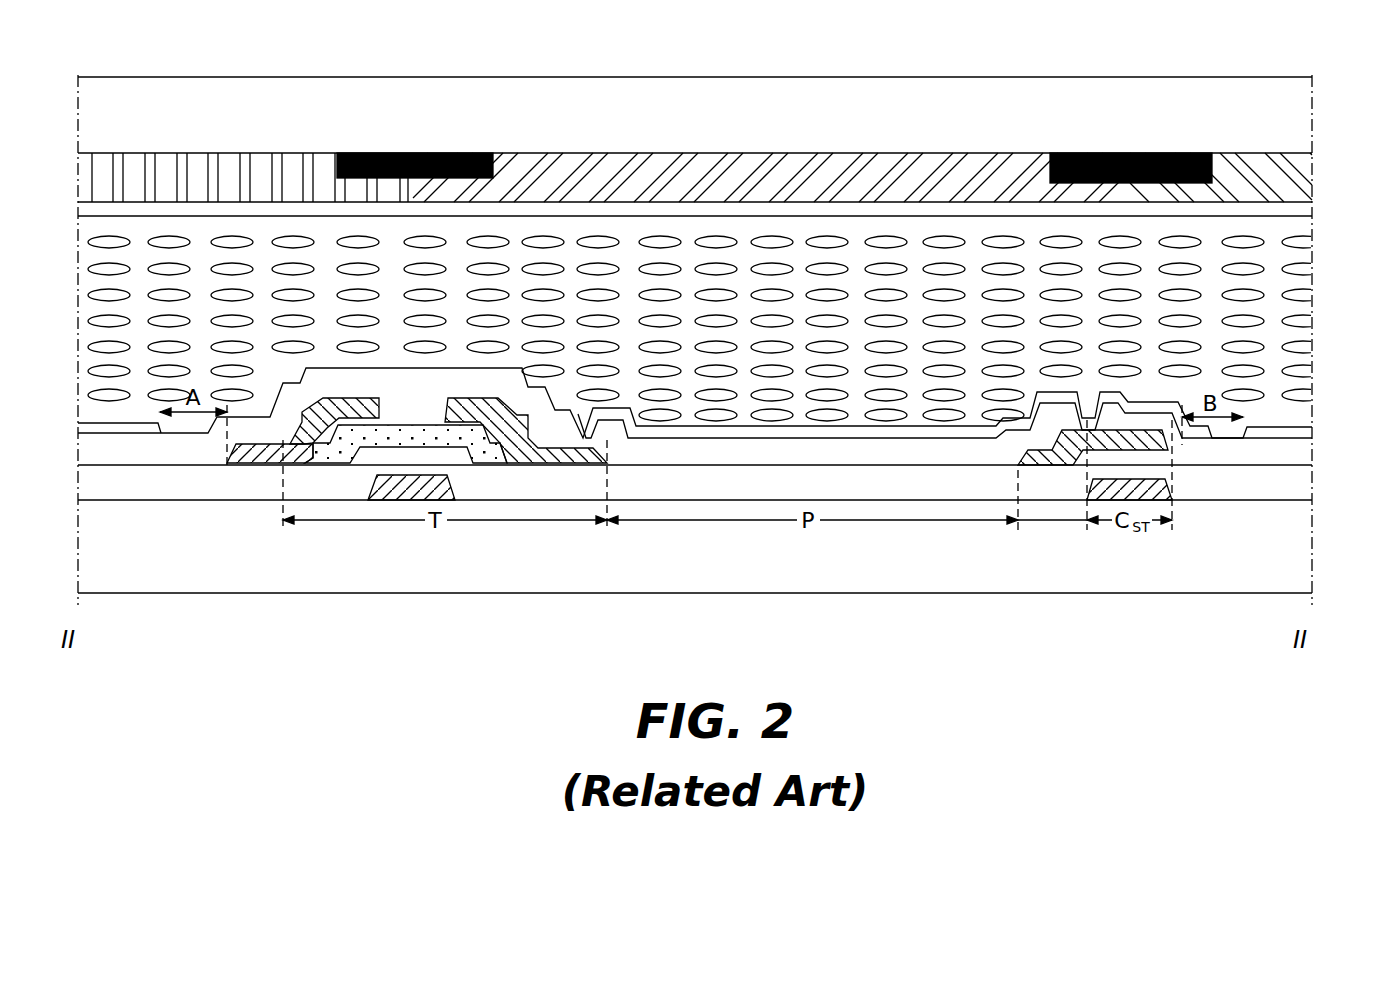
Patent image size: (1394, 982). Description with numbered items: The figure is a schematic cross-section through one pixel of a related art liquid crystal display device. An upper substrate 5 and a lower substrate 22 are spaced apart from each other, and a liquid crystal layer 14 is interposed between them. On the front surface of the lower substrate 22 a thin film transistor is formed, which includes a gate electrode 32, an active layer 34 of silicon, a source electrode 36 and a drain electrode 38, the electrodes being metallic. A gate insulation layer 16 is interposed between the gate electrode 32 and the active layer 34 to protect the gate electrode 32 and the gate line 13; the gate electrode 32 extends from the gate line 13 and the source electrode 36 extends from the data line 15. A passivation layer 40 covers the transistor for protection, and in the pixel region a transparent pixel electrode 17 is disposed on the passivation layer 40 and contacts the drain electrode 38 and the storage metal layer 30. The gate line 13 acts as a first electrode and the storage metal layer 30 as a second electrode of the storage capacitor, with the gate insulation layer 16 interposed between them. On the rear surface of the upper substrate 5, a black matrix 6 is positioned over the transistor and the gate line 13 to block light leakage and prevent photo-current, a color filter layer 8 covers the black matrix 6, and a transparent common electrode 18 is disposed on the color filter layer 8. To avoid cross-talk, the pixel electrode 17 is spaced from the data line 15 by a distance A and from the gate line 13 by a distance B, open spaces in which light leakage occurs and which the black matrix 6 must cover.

The upper substrate 5 is at (706, 113).
The black matrix 6 is at (405, 160).
The color filter layer 8 is at (171, 165).
The common electrode 18 is at (1305, 214).
The liquid crystal layer 14 is at (1305, 340).
The pixel electrode 17 is at (125, 427).
The passivation layer 40 is at (470, 368).
The gate insulation layer 16 is at (1305, 481).
The lower substrate 22 is at (708, 570).
The data line 15 is at (252, 465).
The active layer 34 is at (502, 455).
The source electrode 36 is at (342, 398).
The drain electrode 38 is at (493, 398).
The gate electrode 32 is at (394, 500).
The storage metal layer 30 is at (1040, 468).
The gate line 13 is at (1108, 503).